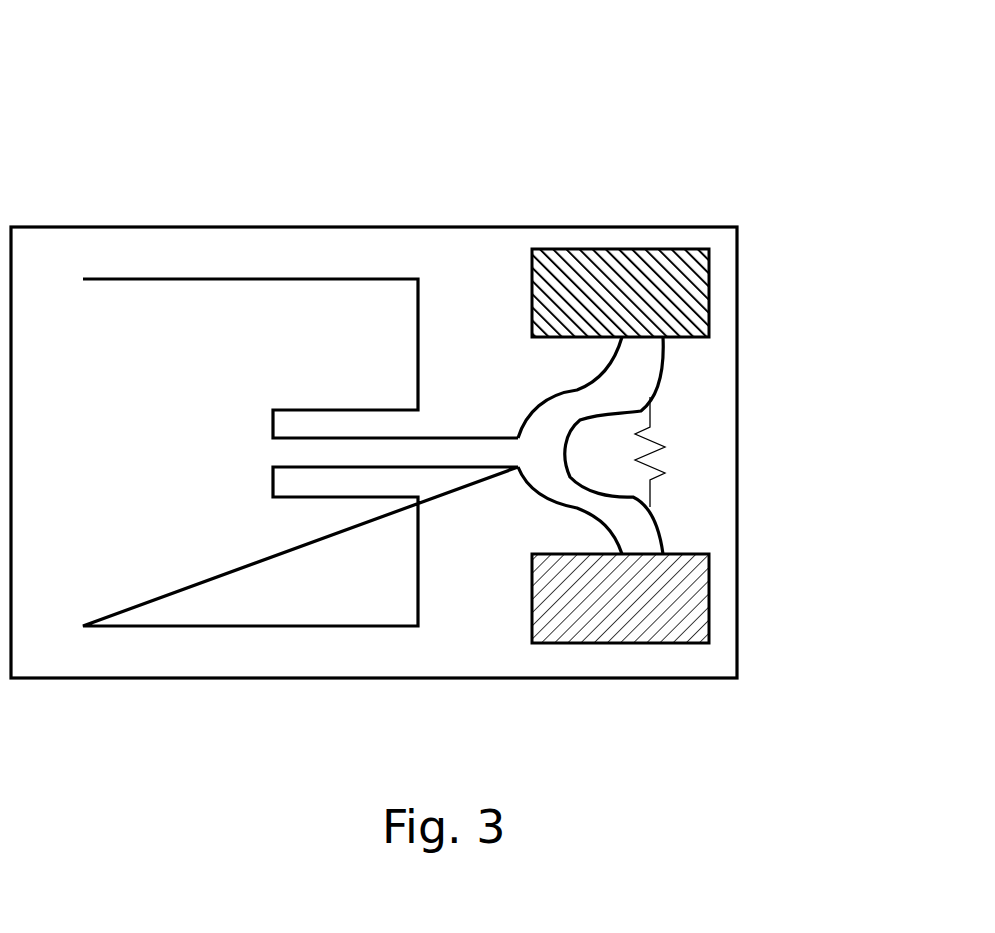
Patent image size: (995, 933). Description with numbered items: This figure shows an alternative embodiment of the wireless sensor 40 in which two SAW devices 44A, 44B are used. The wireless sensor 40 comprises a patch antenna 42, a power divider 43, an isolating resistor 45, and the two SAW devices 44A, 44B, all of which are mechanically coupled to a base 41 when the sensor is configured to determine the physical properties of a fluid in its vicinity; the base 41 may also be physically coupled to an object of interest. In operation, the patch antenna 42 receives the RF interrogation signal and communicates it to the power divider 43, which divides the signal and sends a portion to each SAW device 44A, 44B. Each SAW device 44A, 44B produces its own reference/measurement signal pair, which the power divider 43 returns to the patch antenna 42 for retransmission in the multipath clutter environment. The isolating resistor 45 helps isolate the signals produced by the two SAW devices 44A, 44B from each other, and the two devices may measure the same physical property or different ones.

The wireless sensor 40 is at (750, 153).
The base 41 is at (372, 227).
The patch antenna 42 is at (197, 279).
The power divider 43 is at (504, 413).
The SAW device 44A is at (709, 292).
The SAW device 44B is at (709, 598).
The isolating resistor 45 is at (675, 438).